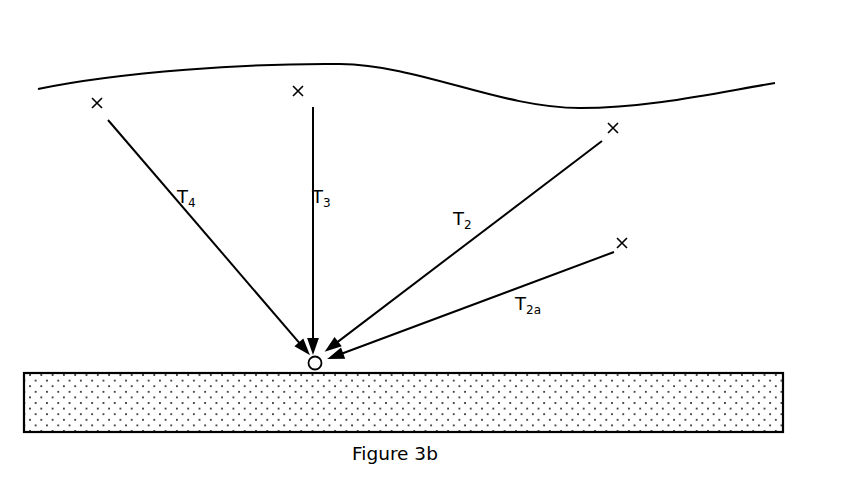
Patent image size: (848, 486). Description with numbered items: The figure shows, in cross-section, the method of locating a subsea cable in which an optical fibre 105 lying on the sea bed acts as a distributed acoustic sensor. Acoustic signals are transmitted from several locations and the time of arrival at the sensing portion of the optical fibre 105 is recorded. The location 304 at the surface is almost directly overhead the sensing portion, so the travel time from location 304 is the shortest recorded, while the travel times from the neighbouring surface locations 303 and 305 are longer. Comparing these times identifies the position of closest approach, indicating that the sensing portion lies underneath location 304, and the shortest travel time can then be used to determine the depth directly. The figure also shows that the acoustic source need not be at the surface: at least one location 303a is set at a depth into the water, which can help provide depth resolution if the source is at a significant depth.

The optical fibre 105 is at (307, 361).
The location 303 is at (620, 140).
The location 303a is at (625, 253).
The location 304 is at (307, 78).
The location 305 is at (95, 114).